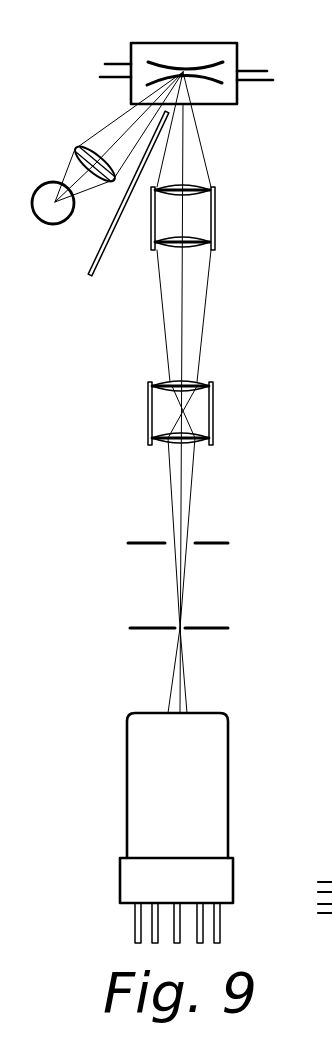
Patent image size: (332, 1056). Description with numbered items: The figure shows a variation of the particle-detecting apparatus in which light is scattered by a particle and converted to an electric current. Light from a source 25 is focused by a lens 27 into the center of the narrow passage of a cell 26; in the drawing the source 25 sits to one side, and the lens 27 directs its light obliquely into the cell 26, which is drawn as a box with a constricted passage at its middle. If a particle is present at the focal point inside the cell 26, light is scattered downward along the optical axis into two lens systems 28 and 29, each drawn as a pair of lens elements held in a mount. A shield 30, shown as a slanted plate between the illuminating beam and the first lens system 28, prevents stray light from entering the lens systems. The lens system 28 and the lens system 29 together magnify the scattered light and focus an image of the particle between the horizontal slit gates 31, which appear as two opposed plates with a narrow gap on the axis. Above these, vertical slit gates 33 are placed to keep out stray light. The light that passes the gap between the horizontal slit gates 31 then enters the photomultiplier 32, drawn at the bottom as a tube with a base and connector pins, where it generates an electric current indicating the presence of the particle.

The source 25 is at (45, 182).
The cell 26 is at (163, 42).
The lens 27 is at (77, 146).
The lens system 28 is at (217, 211).
The lens system 29 is at (215, 414).
The shield 30 is at (98, 262).
The horizontal slit gates 31 is at (137, 627).
The photomultiplier 32 is at (138, 775).
The vertical slit gates 33 is at (143, 542).